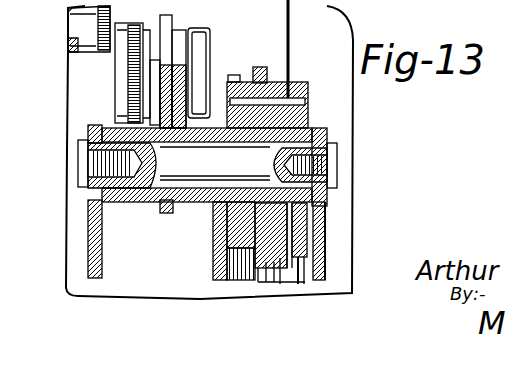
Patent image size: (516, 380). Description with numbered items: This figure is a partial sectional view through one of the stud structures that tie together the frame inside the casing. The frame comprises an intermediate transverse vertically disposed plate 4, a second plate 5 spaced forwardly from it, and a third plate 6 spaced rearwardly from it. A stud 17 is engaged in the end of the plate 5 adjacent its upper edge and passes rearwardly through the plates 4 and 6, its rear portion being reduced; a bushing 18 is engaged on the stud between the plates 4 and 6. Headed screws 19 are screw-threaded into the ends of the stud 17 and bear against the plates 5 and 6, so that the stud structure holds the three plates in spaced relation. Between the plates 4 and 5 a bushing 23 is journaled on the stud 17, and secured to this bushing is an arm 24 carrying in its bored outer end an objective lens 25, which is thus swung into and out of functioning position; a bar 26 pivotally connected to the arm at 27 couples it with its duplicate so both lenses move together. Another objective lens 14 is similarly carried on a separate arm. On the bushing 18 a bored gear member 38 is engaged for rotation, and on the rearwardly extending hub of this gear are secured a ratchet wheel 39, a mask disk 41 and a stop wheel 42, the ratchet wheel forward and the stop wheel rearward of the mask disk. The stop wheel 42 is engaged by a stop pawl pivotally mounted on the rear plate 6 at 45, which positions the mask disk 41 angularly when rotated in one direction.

The intermediate transverse vertically disposed plate 4 is at (222, 263).
The second transverse vertically disposed plate 5 is at (88, 258).
The third transverse vertically disposed plate 6 is at (327, 262).
The objective lens 14 is at (78, 33).
The stud 17 is at (193, 184).
The bushing 18 is at (306, 132).
The headed screw 19 is at (338, 158).
The bushing 23 is at (108, 202).
The arm 24 is at (176, 30).
The objective lens 25 is at (128, 86).
The bar 26 is at (192, 72).
The pivotal connection 27 is at (186, 82).
The bored gear member 38 is at (238, 76).
The ratchet wheel 39 is at (258, 70).
The mask disk 41 is at (290, 18).
The stop wheel 42 is at (302, 82).
The pivotal mounting of stop pawl 45 is at (298, 282).